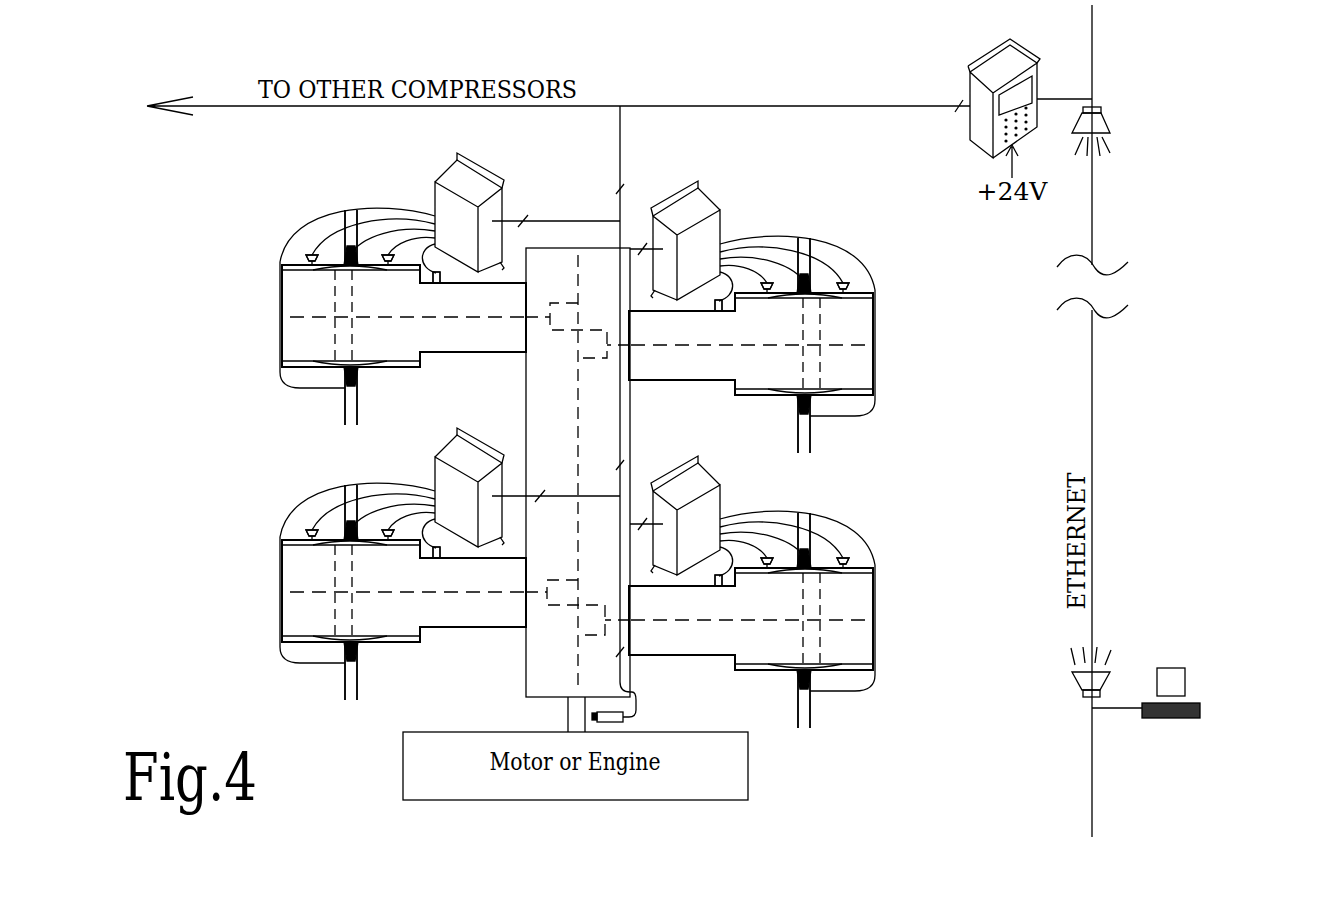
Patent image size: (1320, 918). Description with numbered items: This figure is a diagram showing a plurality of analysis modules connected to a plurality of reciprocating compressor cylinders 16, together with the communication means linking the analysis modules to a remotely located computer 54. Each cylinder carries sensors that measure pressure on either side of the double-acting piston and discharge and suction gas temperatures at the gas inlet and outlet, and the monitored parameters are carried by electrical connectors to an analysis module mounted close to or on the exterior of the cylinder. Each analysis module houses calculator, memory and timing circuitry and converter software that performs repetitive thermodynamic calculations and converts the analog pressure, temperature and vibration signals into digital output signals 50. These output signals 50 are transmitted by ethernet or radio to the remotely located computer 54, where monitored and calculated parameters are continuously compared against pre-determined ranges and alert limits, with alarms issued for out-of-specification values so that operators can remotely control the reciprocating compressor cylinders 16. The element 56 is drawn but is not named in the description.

The plurality of reciprocating compressor cylinders 16 is at (974, 353).
The digital output signals 50 is at (1104, 118).
The remotely located computer 54 is at (1197, 700).
The alarm / annunciator 56 is at (1108, 668).